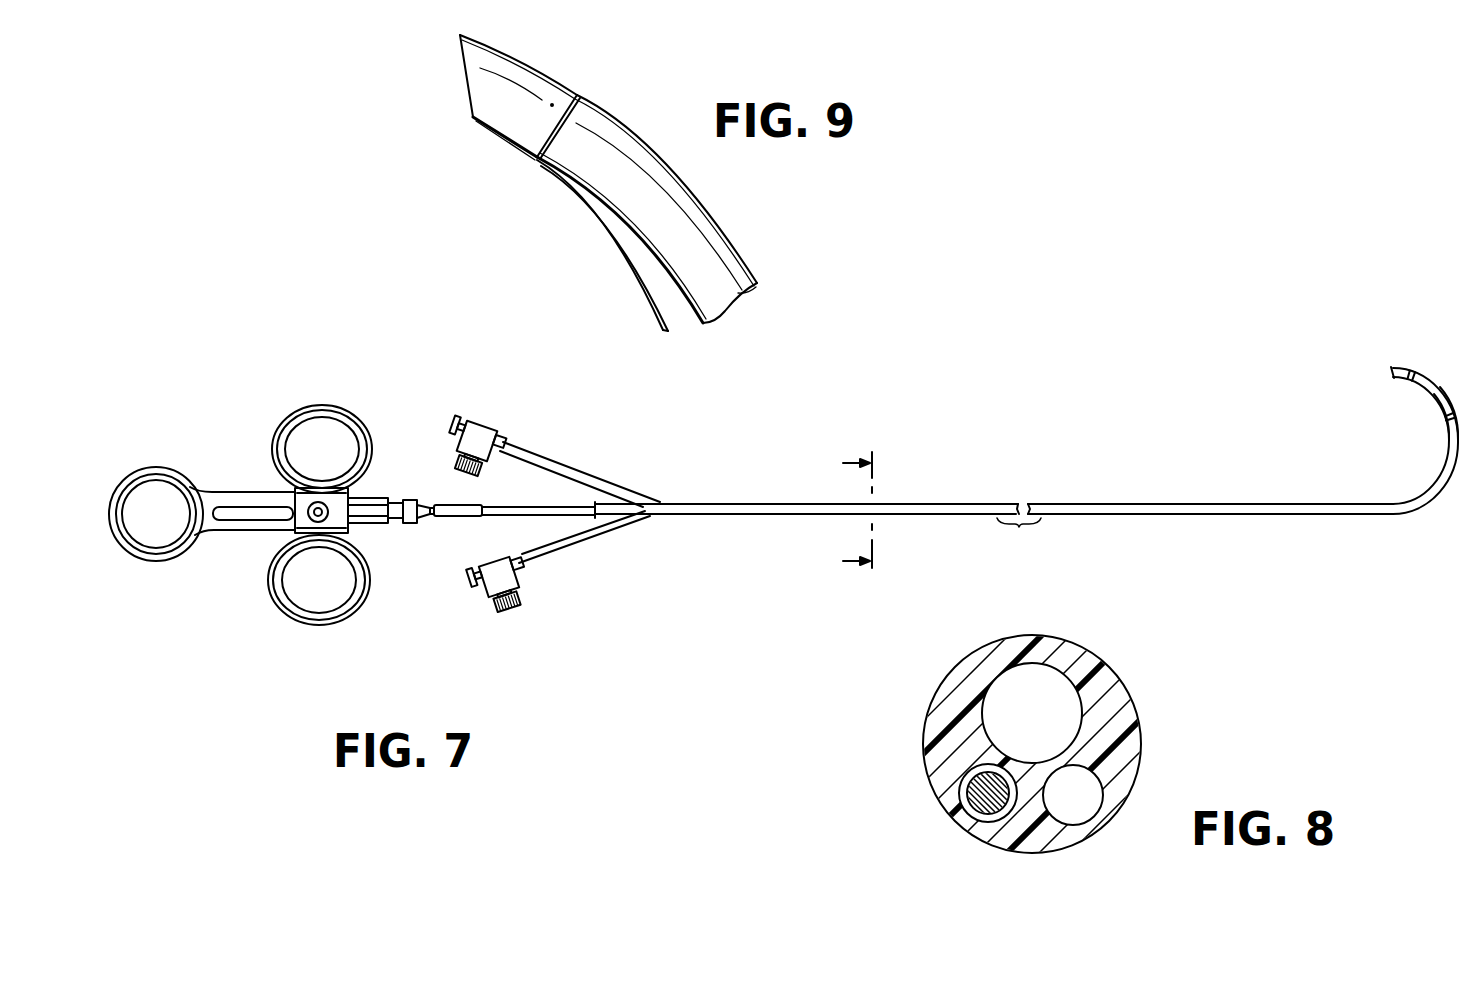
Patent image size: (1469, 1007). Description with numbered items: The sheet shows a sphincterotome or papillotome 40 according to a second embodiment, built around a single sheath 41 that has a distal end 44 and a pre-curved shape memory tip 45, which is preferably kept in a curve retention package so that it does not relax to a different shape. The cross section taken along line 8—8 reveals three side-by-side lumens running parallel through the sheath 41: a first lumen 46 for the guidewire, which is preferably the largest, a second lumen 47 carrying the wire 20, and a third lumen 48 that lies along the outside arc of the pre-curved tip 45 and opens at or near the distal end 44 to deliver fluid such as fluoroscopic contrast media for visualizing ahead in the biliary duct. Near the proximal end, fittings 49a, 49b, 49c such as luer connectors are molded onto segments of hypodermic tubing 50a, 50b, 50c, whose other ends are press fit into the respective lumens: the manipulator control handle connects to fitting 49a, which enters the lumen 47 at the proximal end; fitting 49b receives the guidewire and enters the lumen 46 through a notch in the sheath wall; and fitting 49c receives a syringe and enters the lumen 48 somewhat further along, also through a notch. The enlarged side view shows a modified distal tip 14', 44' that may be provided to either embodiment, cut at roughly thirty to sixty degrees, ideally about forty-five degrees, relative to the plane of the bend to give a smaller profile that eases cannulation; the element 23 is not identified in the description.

In FIG. 7, the section line 8- 8 is at (875, 512).
In FIG. 9, the modified distal tip 14' is at (473, 104).
In FIG. 8, the wire 20 is at (960, 780).
In FIG. 9, the electrode wire 23 is at (617, 274).
In FIG. 7, the papillotome 40 is at (1003, 429).
In FIG. 7, the sheath 41 is at (696, 503).
In FIG. 8, the sheath 41 is at (914, 688).
In FIG. 7, the distal end 44 is at (1387, 423).
In FIG. 9, the modified distal tip 44' is at (588, 209).
In FIG. 7, the pre-curved shape memory tip 45 is at (1393, 420).
In FIG. 8, the first lumen 46 is at (1005, 686).
In FIG. 8, the second lumen 47 is at (984, 822).
In FIG. 8, the third lumen 48 is at (1058, 808).
In FIG. 7, the fitting 49a is at (448, 516).
In FIG. 7, the fitting 49b is at (478, 428).
In FIG. 7, the fitting 49c is at (490, 596).
In FIG. 7, the hypodermic tubing 50a is at (545, 506).
In FIG. 7, the hypodermic tubing 50b is at (572, 470).
In FIG. 7, the hypodermic tubing 50c is at (580, 542).